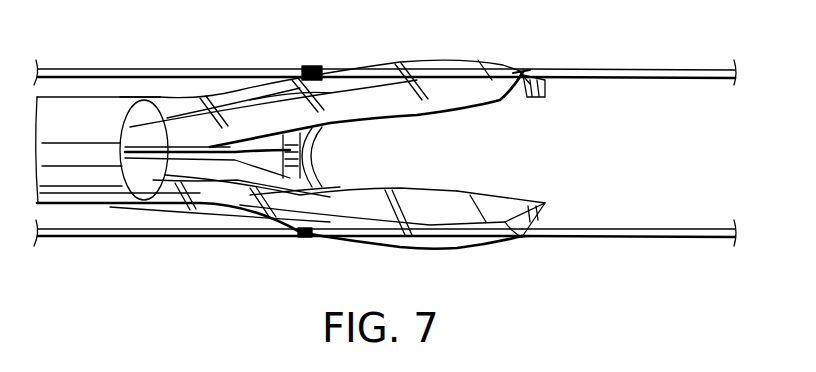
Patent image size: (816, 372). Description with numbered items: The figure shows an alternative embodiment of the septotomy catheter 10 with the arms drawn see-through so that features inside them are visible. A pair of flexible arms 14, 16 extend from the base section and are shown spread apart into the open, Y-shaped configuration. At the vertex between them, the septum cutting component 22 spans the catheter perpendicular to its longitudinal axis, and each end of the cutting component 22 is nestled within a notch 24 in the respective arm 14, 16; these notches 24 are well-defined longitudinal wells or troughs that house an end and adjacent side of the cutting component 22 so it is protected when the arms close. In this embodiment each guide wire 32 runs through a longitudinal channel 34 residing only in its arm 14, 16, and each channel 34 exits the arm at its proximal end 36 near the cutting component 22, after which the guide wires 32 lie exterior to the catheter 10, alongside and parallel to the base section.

The septotomy catheter 10 is at (96, 58).
The flexible arm 14 is at (417, 117).
The flexible arm 16 is at (470, 190).
The septum cutting component 22 is at (317, 157).
The notch 24 is at (313, 100).
The guide wire 32 is at (197, 69).
The channel 34 is at (513, 73).
The proximal end 36 is at (320, 65).